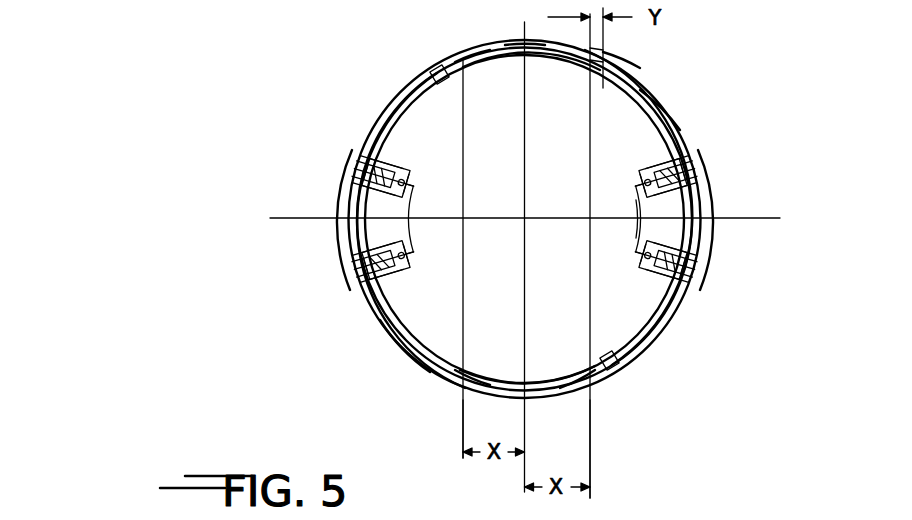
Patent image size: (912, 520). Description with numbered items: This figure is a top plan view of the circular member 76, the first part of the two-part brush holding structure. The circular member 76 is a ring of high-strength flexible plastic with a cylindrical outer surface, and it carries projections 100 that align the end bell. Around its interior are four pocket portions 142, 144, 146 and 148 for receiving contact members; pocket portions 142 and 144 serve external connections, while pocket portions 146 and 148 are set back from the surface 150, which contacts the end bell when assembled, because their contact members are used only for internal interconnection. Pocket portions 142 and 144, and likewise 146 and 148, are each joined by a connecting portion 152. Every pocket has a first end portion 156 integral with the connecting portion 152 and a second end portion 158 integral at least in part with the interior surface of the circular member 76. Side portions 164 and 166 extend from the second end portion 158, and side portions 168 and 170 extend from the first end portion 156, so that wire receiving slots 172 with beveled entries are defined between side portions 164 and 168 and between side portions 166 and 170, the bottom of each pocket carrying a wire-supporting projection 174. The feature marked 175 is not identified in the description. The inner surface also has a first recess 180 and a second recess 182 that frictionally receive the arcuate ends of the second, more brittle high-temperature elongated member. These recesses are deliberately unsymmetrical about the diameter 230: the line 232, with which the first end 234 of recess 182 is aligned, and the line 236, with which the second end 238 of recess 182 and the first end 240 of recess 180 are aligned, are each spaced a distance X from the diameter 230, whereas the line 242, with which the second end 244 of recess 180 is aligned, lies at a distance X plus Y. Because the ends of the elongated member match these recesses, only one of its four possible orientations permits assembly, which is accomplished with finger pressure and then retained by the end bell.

The circular member 76 is at (648, 106).
The projections 100 is at (430, 72).
The pocket portion 142 is at (708, 159).
The pocket portion 144 is at (693, 297).
The pocket portion 146 is at (253, 180).
The pocket portion 148 is at (372, 316).
The surface 150 is at (410, 332).
The connecting portion 152 is at (414, 177).
The first end portion 156 is at (412, 180).
The second end portion 158 is at (380, 168).
The side portion 164 is at (380, 163).
The side portion 166 is at (372, 210).
The side portion 168 is at (363, 168).
The side portion 170 is at (636, 212).
The wire receiving slots 172 is at (390, 152).
The wire-supporting projection 174 is at (387, 167).
The clamp seat 175 is at (414, 164).
The first recess 180 is at (503, 54).
The second recess 182 is at (556, 398).
The diameter 230 is at (526, 62).
The line 232 is at (594, 456).
The first end of recess 182 234 is at (585, 380).
The line 236 is at (462, 438).
The second end of recess 182 238 is at (470, 382).
The first end of recess 180 240 is at (468, 66).
The line 242 is at (618, 58).
The second end of recess 180 244 is at (598, 70).